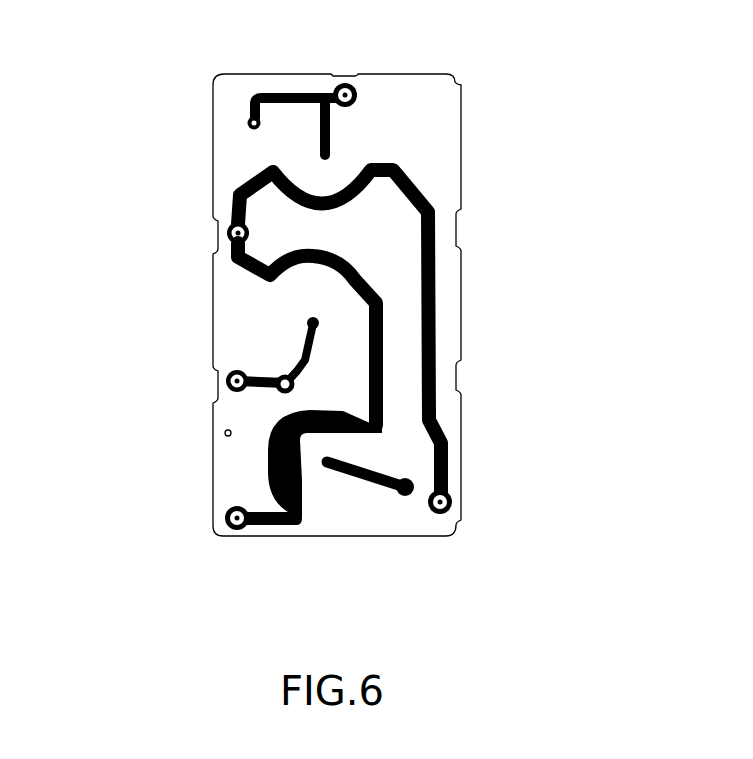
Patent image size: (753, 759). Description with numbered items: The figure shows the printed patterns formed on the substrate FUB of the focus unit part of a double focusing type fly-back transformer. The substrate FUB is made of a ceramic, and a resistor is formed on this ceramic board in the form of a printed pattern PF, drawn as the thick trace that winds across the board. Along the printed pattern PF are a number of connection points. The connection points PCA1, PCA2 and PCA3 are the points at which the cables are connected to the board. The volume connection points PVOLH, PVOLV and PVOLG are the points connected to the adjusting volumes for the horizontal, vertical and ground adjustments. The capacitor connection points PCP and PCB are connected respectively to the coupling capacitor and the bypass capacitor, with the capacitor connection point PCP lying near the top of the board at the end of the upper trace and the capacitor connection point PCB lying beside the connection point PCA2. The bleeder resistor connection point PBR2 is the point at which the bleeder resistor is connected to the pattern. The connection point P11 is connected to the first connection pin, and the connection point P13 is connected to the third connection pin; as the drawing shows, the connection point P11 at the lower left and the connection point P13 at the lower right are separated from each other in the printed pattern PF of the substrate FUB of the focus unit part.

The substrate of the focus unit part FUB is at (487, 189).
The volume connection point PVOLH is at (421, 101).
The capacitor connection point PCP is at (358, 90).
The connection point PCA1 is at (250, 127).
The printed pattern PF is at (453, 318).
The bleeder resistor connection point PBR2 is at (228, 232).
The connection point P11 is at (225, 522).
The volume connection point PVOLV is at (308, 321).
The connection point PCA2 is at (226, 381).
The capacitor connection point PCB is at (284, 393).
The volume connection point PVOLG is at (328, 470).
The connection point PCA3 is at (394, 497).
The connection point P13 is at (452, 500).